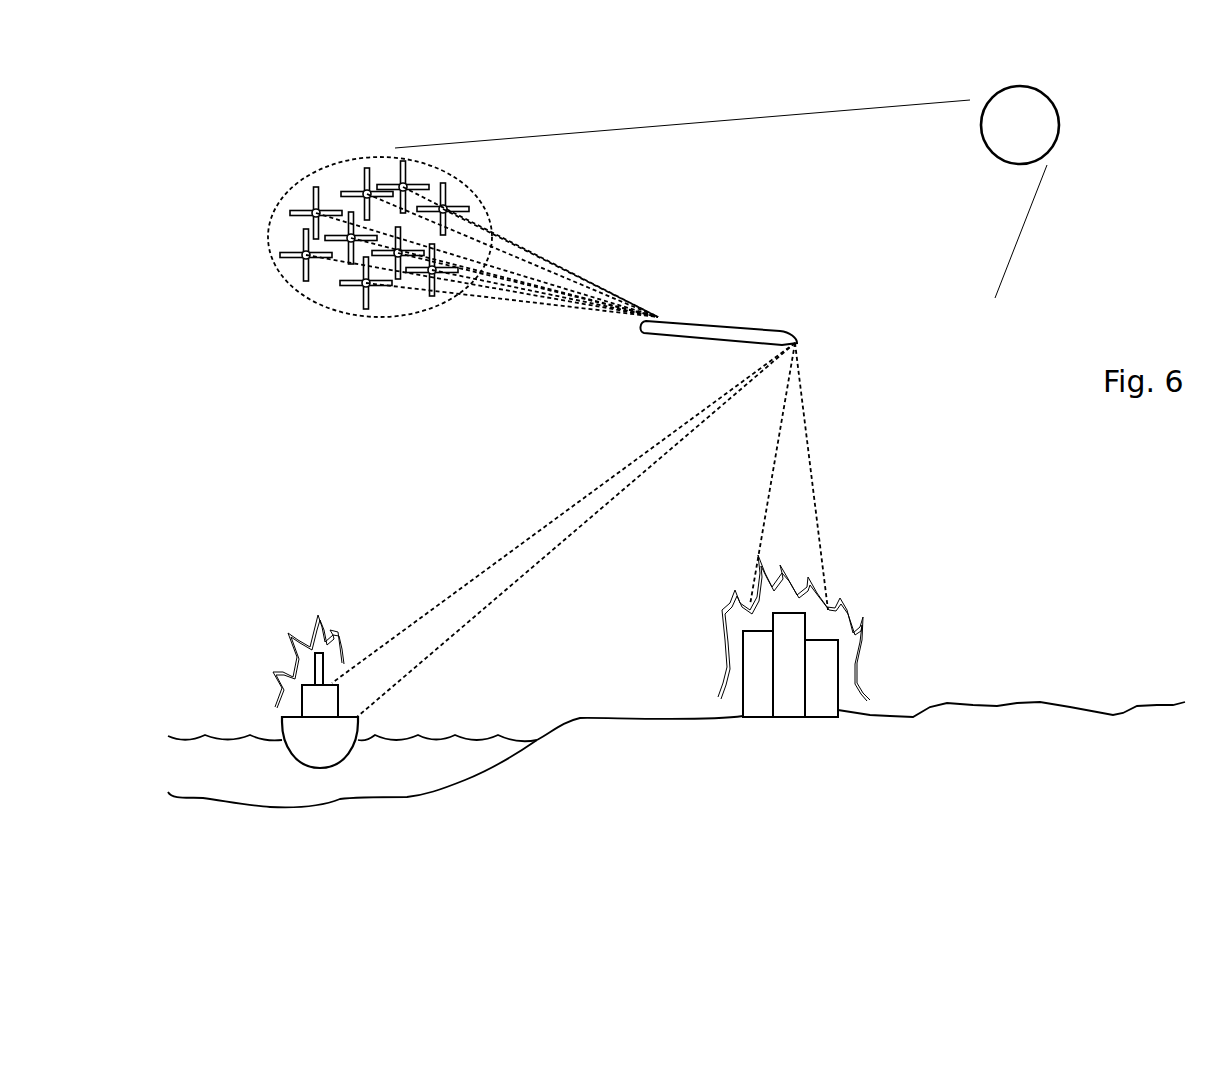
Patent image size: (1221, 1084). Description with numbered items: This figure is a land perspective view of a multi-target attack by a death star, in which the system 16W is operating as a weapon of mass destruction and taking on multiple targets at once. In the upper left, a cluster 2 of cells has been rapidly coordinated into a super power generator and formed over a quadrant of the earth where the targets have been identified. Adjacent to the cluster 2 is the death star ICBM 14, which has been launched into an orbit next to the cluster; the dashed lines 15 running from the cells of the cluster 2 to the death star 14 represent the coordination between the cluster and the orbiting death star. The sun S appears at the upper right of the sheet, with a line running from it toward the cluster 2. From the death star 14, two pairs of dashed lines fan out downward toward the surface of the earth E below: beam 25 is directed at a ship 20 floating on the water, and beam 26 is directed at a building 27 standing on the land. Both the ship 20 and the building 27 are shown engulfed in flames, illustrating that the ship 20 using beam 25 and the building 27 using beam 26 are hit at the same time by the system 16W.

The cluster 2 is at (310, 173).
The death star ICBM 14 is at (730, 327).
The satellite signals 15 is at (608, 290).
The system 16W is at (888, 123).
The sun S is at (1040, 128).
The ship 20 is at (357, 728).
The beam 25 is at (495, 563).
The beam 26 is at (822, 552).
The building 27 is at (833, 673).
The earth E is at (906, 788).